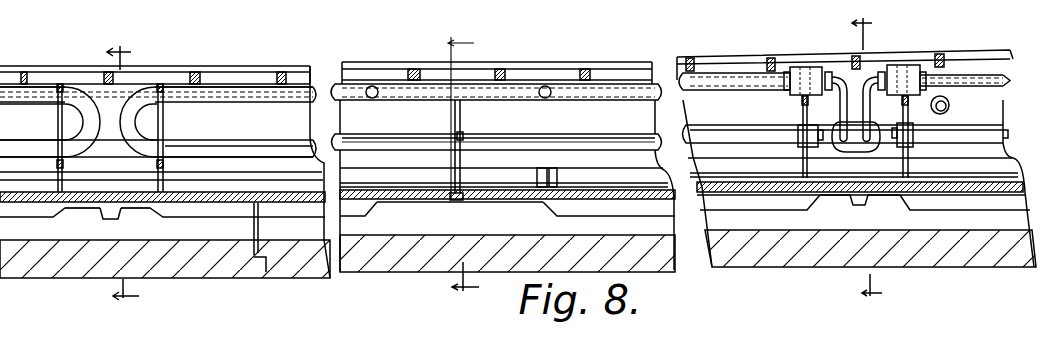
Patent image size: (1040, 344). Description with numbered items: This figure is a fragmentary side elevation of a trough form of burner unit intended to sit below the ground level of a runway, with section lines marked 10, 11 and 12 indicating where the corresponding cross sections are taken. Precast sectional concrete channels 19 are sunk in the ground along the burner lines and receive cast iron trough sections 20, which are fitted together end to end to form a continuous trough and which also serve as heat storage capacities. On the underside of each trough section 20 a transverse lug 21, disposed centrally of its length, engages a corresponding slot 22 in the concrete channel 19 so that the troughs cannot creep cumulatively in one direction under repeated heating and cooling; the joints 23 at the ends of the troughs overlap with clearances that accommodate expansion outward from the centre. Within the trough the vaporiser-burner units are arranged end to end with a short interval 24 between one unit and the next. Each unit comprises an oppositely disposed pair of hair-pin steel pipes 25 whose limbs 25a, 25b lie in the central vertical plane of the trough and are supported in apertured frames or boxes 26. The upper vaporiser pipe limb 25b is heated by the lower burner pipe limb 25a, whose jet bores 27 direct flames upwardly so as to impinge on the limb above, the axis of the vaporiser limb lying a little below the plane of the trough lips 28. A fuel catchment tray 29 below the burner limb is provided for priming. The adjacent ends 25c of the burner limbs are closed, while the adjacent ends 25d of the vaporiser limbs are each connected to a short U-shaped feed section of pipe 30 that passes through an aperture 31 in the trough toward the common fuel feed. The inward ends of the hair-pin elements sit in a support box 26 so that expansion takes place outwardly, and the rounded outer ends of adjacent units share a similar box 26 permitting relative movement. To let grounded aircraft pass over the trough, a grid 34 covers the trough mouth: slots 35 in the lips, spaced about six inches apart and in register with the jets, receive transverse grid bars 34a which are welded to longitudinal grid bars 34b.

The section line 10- 10 is at (108, 174).
The section line 11- 11 is at (451, 165).
The section line 12- 12 is at (856, 157).
The precast sectional concrete channel 19 is at (468, 252).
The cast iron trough section 20 is at (230, 204).
The transverse lug 21 is at (118, 213).
The slot 22 is at (98, 211).
The joint 23 is at (456, 200).
The interval or space 24 is at (113, 125).
The steel pipe 25 is at (404, 74).
The burner pipe limb 25a is at (533, 144).
The vaporiser pipe limb 25b is at (551, 84).
The adjacent end of burner pipe limb 25c is at (804, 129).
The adjacent end of vaporiser pipe limb 25d is at (800, 67).
The frame or box 26 is at (160, 158).
The jet bore 27 is at (280, 136).
The lip 28 is at (612, 69).
The fuel catchment tray 29 is at (578, 174).
The U-shaped feed section of pipe 30 is at (838, 93).
The aperture 31 is at (856, 143).
The grid 34 is at (486, 64).
The transverse grid bar 34a is at (200, 73).
The longitudinal grid bar 34b is at (366, 62).
The slot 35 is at (286, 74).